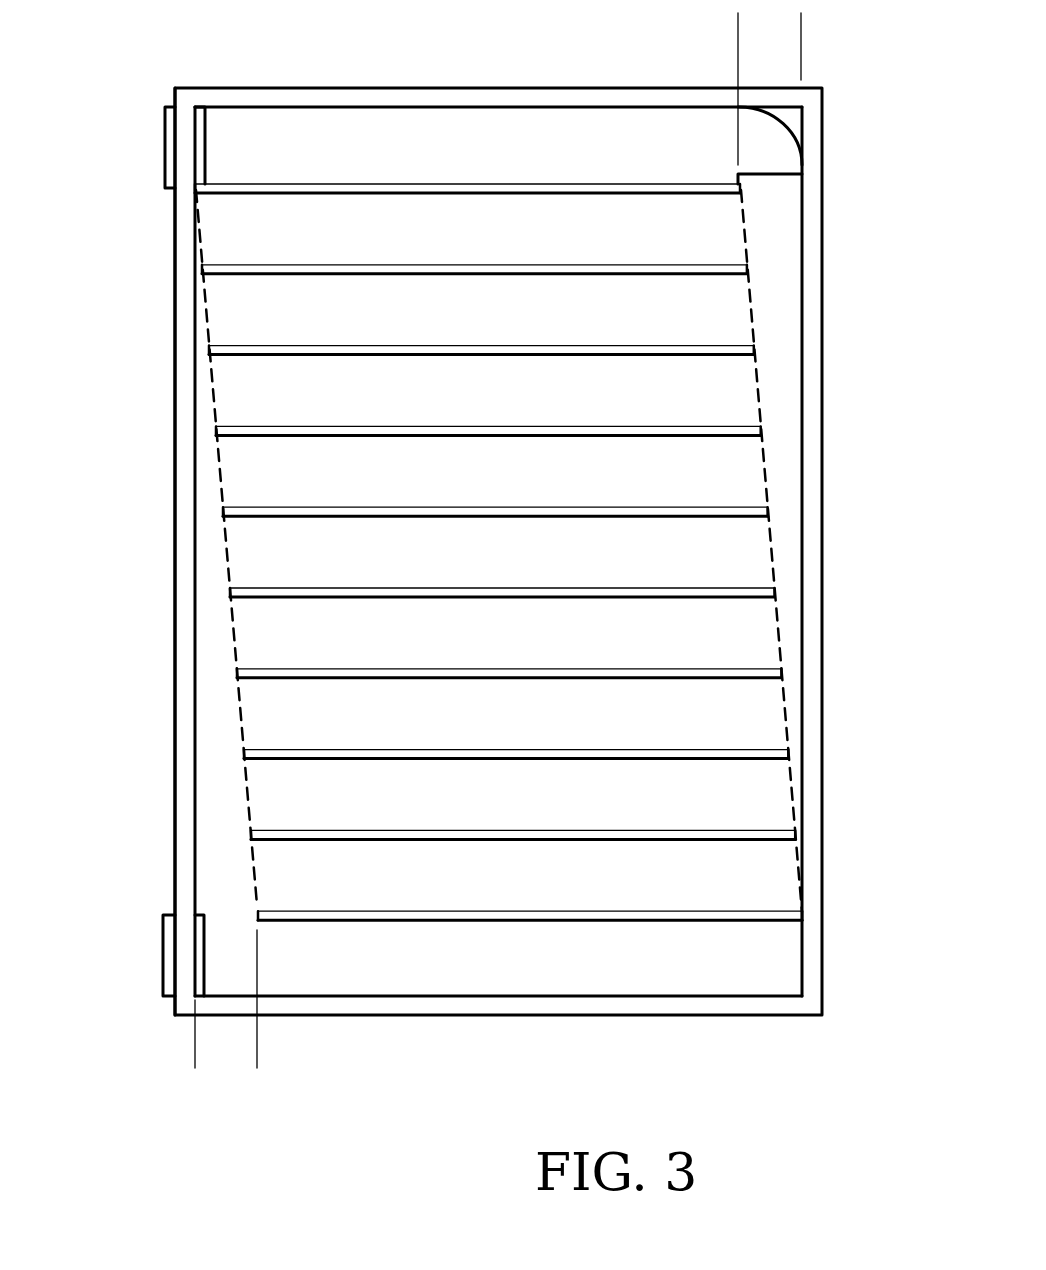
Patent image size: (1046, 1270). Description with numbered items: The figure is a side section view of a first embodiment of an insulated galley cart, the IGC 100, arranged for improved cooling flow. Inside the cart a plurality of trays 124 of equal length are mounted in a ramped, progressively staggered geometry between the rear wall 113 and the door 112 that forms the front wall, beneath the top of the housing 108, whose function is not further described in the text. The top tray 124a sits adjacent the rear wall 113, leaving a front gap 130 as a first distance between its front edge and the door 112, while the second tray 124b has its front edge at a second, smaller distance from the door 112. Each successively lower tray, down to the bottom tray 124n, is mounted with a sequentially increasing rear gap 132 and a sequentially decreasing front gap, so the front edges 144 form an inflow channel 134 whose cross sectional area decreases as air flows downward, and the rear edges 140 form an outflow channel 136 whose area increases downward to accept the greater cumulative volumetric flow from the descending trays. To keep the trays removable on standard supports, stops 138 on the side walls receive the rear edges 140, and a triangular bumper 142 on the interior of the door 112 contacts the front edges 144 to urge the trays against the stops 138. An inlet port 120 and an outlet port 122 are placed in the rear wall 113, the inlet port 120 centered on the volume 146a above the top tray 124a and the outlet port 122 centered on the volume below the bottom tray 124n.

The IGC 100 is at (851, 384).
The top wall 108 is at (485, 95).
The door 112 is at (810, 525).
The rear wall 113 is at (183, 517).
The inlet port 120 is at (165, 152).
The outlet port 122 is at (163, 963).
The trays 124 is at (502, 569).
The top tray 124a is at (562, 188).
The second tray 124b is at (508, 270).
The bottom tray 124n is at (568, 917).
The front gap 130 is at (801, 45).
The rear gap 132 is at (257, 1047).
The inflow channel 134 is at (777, 323).
The outflow channel 136 is at (212, 720).
The stops 138 is at (217, 422).
The rear edges 140 is at (233, 592).
The triangular bumper 142 is at (772, 232).
The front edges 144 is at (772, 591).
The volume above the top tray 146a is at (413, 164).